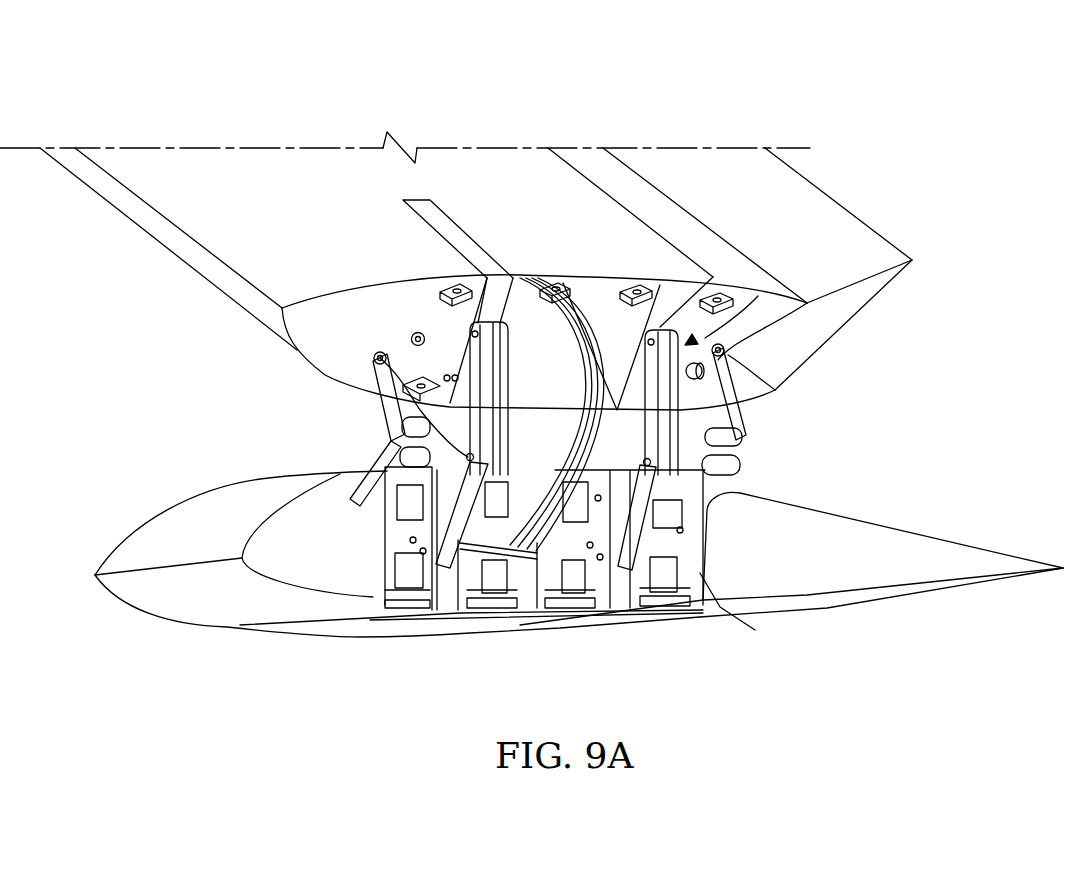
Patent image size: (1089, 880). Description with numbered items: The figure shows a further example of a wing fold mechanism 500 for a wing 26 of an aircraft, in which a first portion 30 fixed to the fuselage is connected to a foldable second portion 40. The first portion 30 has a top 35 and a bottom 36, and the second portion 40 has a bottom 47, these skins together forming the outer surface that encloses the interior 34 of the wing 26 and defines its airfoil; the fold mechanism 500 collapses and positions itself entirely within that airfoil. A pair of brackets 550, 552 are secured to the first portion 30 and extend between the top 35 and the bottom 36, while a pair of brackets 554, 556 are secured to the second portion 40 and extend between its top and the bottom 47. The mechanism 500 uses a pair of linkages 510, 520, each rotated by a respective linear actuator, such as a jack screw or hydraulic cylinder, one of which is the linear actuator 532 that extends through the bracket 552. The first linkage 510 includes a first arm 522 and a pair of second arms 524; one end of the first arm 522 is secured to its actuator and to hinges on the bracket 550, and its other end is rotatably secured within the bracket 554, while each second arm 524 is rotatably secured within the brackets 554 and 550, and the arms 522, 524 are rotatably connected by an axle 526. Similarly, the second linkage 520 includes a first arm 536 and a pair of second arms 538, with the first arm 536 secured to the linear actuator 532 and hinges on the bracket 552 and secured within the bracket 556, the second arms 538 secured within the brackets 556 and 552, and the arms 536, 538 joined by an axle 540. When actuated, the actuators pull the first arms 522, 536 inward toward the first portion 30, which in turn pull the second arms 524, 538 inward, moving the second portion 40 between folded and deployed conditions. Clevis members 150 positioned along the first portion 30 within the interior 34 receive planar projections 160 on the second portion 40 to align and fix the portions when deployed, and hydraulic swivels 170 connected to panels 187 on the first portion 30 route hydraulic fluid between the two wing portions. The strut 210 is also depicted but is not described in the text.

The wing 26 is at (173, 635).
The first portion 30 is at (130, 533).
The interior 34 is at (820, 347).
The top 35 is at (890, 519).
The bottom 36 is at (943, 593).
The second portion 40 is at (147, 225).
The bottom 47 is at (243, 209).
The clevis member 150 is at (681, 620).
The projection 160 is at (716, 287).
The hydraulic swivel 170 is at (378, 443).
The panel 187 is at (740, 622).
The strut 210 is at (513, 276).
The wing fold mechanism 500 is at (762, 428).
The first linkage 510 is at (452, 331).
The second linkage 520 is at (733, 332).
The first arm 522 is at (437, 567).
The second arm 524 is at (411, 336).
The axle 526 is at (376, 356).
The linear actuator 532 is at (519, 590).
The first arm 536 is at (612, 468).
The second arm 538 is at (647, 352).
The axle 540 is at (713, 533).
The bracket 550 is at (437, 583).
The bracket 552 is at (624, 615).
The bracket 554 is at (434, 302).
The bracket 556 is at (584, 284).